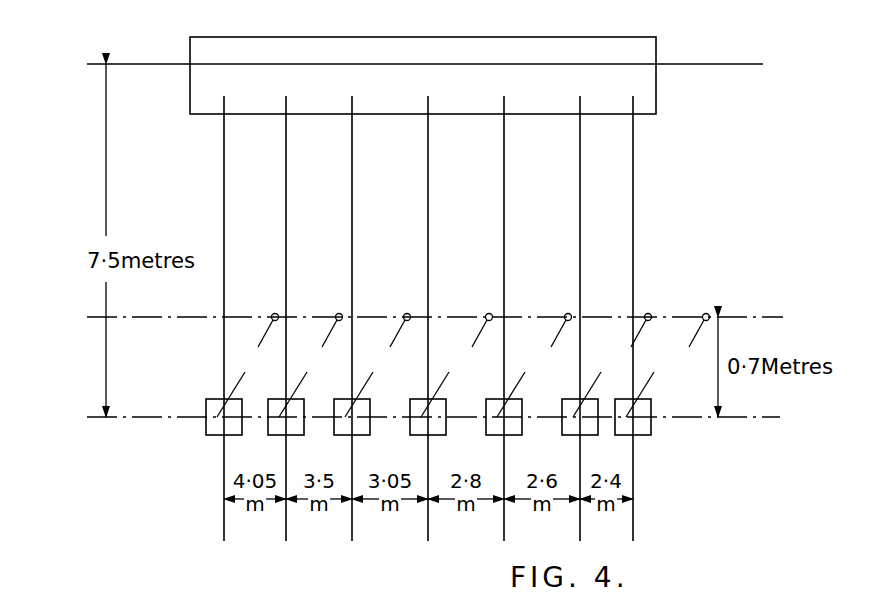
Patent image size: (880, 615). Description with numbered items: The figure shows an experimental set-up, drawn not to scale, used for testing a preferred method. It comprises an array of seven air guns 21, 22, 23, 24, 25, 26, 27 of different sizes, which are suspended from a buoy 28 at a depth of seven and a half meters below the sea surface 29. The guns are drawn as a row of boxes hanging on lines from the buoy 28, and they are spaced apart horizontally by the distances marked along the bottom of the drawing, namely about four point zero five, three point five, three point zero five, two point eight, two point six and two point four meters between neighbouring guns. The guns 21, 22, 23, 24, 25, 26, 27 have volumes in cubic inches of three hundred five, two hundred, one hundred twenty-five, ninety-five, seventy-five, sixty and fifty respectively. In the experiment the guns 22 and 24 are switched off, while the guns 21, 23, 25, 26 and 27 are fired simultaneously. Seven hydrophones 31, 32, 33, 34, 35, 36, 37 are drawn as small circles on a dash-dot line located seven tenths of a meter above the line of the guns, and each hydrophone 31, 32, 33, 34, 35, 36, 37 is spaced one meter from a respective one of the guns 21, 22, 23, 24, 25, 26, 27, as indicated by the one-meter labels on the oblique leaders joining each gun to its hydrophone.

The air gun 21 is at (213, 427).
The air gun 22 is at (275, 427).
The air gun 23 is at (341, 427).
The air gun 24 is at (417, 427).
The air gun 25 is at (493, 427).
The air gun 26 is at (569, 427).
The air gun 27 is at (622, 427).
The buoy 28 is at (657, 92).
The sea surface 29 is at (149, 66).
The hydrophone 31 is at (272, 318).
The hydrophone 32 is at (336, 318).
The hydrophone 33 is at (408, 318).
The hydrophone 34 is at (487, 318).
The hydrophone 35 is at (563, 318).
The hydrophone 36 is at (649, 318).
The hydrophone 37 is at (711, 318).